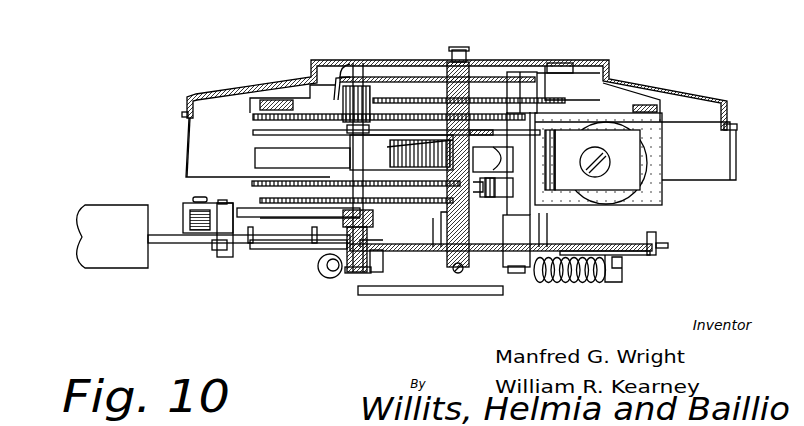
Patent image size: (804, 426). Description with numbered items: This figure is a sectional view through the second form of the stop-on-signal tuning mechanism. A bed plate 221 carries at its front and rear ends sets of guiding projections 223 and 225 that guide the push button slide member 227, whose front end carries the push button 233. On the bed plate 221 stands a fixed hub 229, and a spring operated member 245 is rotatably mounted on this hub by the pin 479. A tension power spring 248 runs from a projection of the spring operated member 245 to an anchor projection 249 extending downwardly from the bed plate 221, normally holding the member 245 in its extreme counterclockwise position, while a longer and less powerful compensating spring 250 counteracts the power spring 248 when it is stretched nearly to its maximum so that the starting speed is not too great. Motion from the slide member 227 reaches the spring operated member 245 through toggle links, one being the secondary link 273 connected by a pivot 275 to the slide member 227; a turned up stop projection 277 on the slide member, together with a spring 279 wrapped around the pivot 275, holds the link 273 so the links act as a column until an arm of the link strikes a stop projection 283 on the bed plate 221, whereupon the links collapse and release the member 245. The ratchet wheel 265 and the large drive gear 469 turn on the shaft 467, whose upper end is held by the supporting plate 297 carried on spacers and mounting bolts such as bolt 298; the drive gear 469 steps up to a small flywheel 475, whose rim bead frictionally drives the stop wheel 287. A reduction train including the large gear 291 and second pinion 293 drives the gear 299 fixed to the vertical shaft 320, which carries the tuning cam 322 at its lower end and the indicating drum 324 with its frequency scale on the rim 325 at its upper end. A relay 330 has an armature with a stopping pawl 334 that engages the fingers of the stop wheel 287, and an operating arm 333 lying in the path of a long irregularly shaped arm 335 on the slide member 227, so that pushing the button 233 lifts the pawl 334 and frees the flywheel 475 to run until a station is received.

The bed plate 221 is at (650, 257).
The guiding projections 223 is at (317, 250).
The guiding projections 225 is at (656, 233).
The push button slide member 227 is at (583, 240).
The fixed hub 229 is at (372, 270).
The push button 233 is at (90, 226).
The spring operated member 245 is at (250, 212).
The tension power spring 248 is at (568, 281).
The anchor projection 249 is at (616, 283).
The compensating spring 250 is at (320, 268).
The ratchet wheel 265 is at (423, 207).
The secondary link 273 is at (183, 210).
The pivot 275 is at (193, 200).
The stop projection 277 is at (226, 236).
The spring 279 is at (215, 248).
The stop projection 283 is at (250, 243).
The stop wheel 287 is at (257, 133).
The large gear 291 is at (250, 112).
The second pinion 293 is at (333, 86).
The supporting plate 297 is at (418, 62).
The mounting bolt 298 is at (515, 273).
The gear 299 is at (545, 97).
The vertical shaft 320 is at (467, 51).
The tuning cam 322 is at (423, 290).
The indicating drum 324 is at (314, 62).
The rim 325 is at (187, 135).
The relay 330 is at (632, 180).
The operating arm 333 is at (480, 180).
The stopping pawl 334 is at (543, 137).
The arm 335 is at (441, 230).
The shaft 467 is at (330, 157).
The large drive gear 469 is at (254, 184).
The small flywheel 475 is at (257, 153).
The pin 479 is at (350, 275).